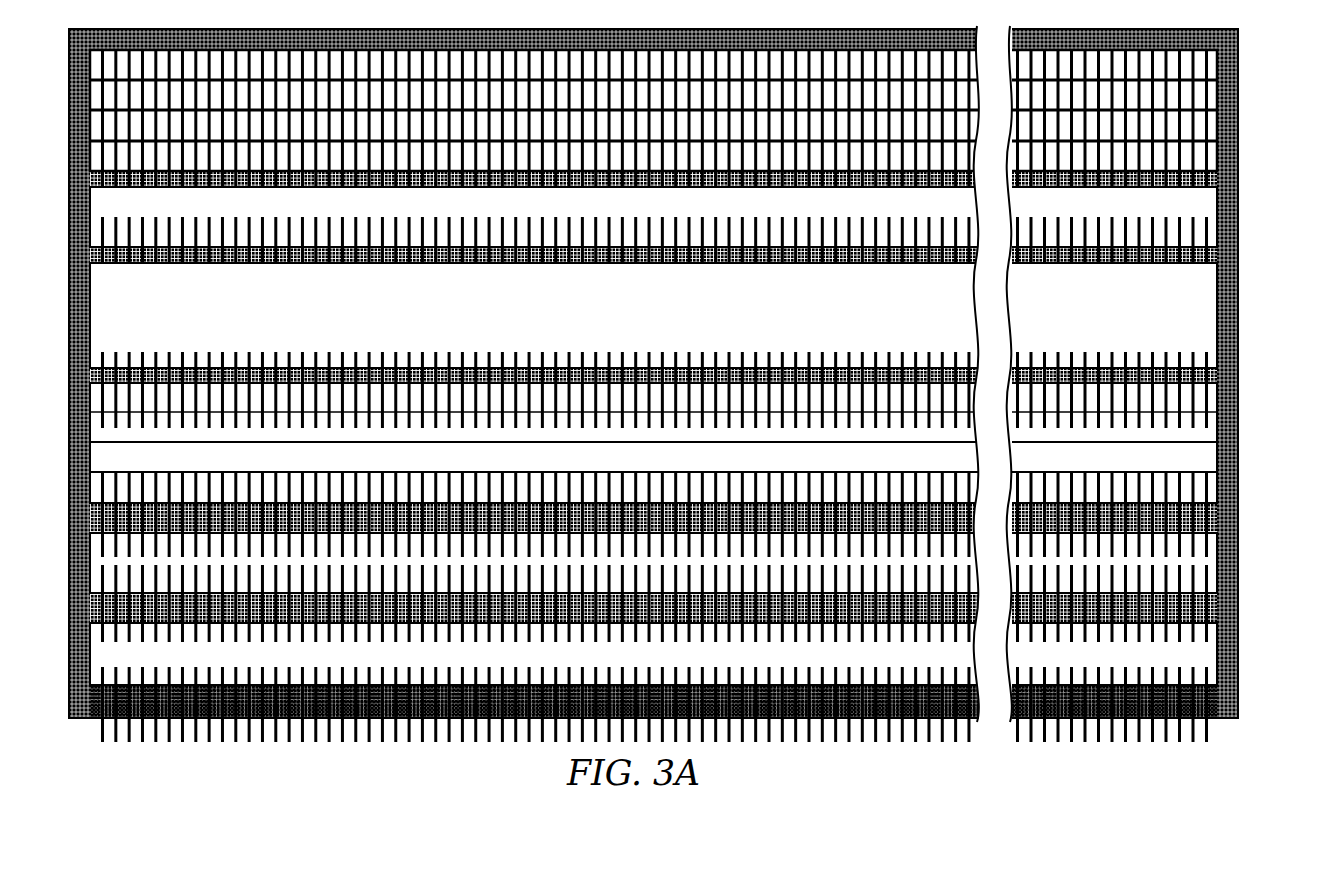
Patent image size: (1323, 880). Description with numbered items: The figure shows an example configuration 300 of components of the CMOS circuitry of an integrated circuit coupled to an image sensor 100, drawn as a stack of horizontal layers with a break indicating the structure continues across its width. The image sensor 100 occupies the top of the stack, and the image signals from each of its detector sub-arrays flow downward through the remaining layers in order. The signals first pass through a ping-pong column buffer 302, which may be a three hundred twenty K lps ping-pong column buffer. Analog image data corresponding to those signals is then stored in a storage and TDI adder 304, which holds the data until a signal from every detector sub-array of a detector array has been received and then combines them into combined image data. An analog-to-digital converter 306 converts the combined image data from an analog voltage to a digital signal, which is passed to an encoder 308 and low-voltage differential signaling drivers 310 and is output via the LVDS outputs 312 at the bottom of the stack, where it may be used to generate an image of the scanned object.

The image sensor 100 is at (53, 52).
The configuration 300 is at (1252, 185).
The ping-pong column buffer 302 is at (90, 216).
The storage and TDI adder 304 is at (90, 316).
The analog-to-digital (A/D) converter 306 is at (90, 460).
The encoder 308 is at (90, 565).
The low-voltage differential signaling (LVDS) drivers 310 is at (90, 657).
The LVDS outputs 312 is at (100, 728).